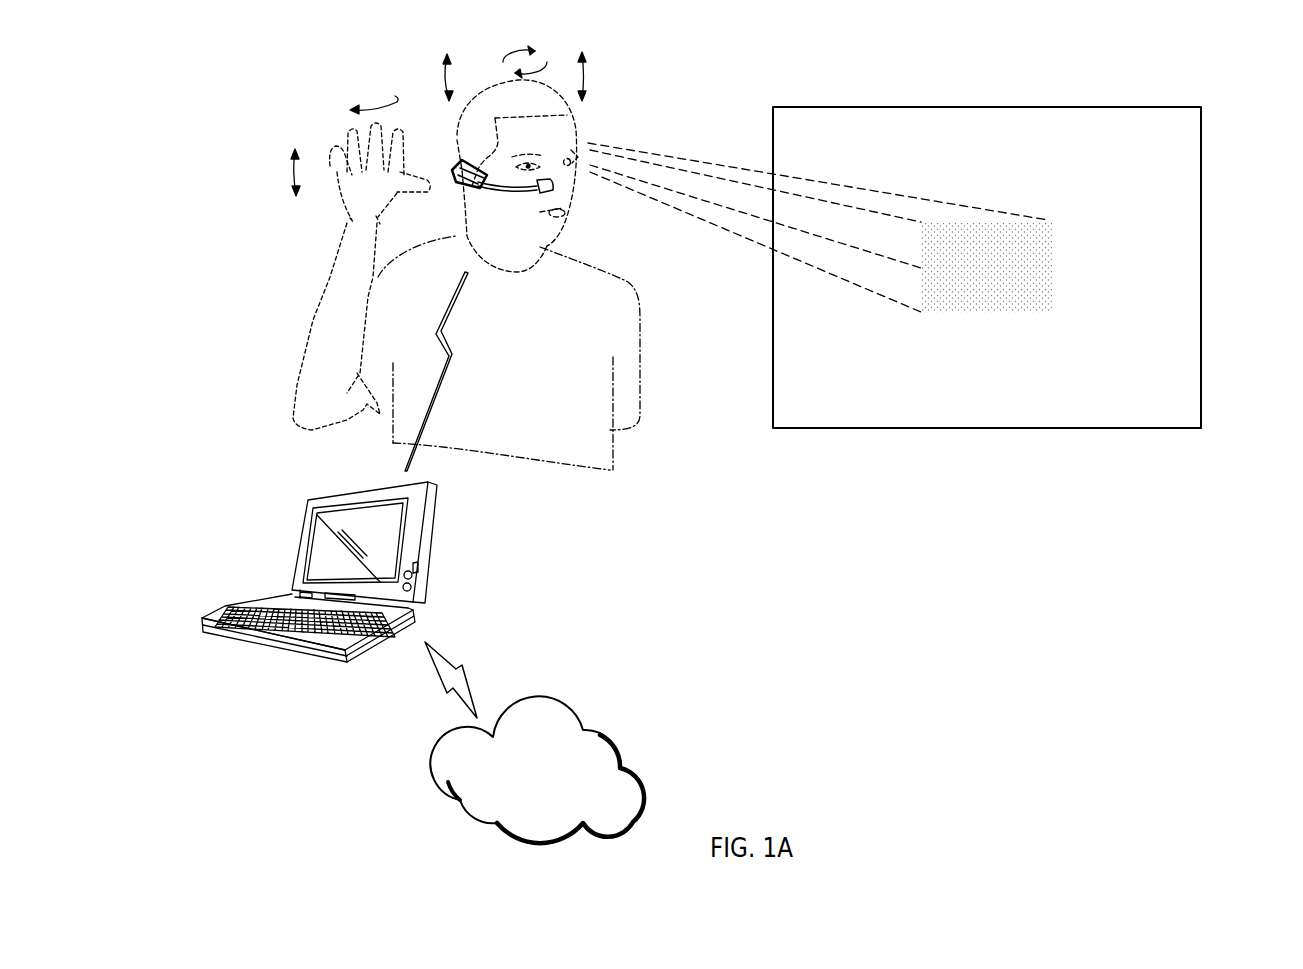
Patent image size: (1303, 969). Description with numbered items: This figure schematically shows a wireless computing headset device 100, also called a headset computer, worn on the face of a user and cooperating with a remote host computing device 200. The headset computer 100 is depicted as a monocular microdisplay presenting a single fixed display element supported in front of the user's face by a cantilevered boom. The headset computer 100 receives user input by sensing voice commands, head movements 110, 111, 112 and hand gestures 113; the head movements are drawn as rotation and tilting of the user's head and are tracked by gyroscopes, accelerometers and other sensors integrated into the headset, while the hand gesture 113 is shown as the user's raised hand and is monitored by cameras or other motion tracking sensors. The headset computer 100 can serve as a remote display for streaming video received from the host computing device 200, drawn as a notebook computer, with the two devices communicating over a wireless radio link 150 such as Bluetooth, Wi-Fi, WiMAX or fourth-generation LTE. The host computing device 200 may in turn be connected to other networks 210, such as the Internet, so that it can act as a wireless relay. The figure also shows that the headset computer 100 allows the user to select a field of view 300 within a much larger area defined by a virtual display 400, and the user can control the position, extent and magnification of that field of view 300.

The wireless computing headset device 100 is at (497, 185).
The head movement 110 is at (513, 60).
The head movement 111 is at (588, 80).
The head movement 112 is at (445, 77).
The hand gesture 113 is at (293, 173).
The wireless radio link 150 is at (428, 397).
The host computing device 200 is at (438, 538).
The network 210 is at (623, 752).
The field of view 300 is at (1053, 265).
The virtual display 400 is at (870, 429).